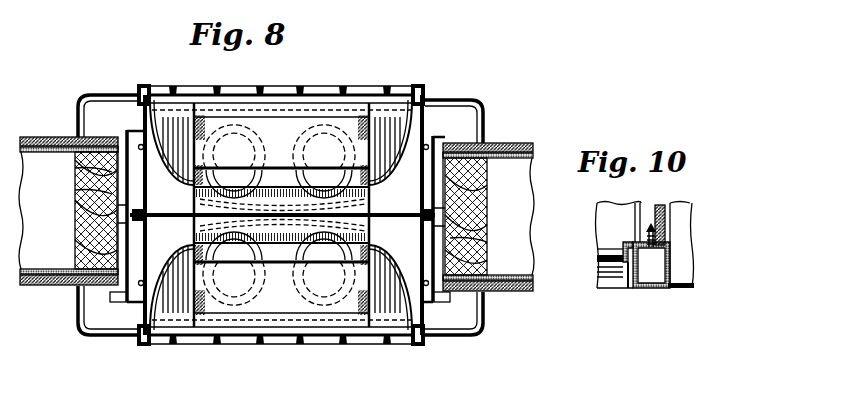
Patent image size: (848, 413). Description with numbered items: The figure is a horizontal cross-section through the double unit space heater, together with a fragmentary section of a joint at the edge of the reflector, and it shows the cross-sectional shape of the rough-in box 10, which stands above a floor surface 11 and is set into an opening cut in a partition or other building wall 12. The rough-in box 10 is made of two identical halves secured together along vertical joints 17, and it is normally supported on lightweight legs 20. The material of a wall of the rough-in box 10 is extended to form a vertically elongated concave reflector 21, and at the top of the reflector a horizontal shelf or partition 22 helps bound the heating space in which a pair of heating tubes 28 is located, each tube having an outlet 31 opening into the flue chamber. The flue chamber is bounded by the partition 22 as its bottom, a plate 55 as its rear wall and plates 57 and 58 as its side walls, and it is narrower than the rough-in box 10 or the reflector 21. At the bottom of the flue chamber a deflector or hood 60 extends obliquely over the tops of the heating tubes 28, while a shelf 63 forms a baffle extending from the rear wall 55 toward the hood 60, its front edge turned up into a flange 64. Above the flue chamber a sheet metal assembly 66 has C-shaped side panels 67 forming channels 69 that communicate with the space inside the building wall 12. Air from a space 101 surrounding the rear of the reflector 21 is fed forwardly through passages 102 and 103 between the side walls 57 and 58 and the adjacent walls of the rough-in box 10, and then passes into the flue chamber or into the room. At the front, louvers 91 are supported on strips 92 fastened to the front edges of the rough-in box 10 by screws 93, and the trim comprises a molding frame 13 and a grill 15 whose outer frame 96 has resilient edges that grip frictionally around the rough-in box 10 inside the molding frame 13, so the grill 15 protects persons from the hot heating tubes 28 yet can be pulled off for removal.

In FIG. 8, the rough-in box 10 is at (486, 179).
In FIG. 10, the rough-in box 10 is at (660, 204).
In FIG. 8, the floor surface 11 is at (377, 310).
In FIG. 8, the partition or other building wall 12 is at (50, 137).
In FIG. 8, the molding frame 13 is at (84, 93).
In FIG. 10, the molding frame 13 is at (683, 290).
In FIG. 8, the grill 15 is at (318, 88).
In FIG. 10, the grill 15 is at (647, 290).
In FIG. 8, the vertical joints 17 is at (150, 205).
In FIG. 8, the legs 20 is at (108, 297).
In FIG. 8, the concave reflector 21 is at (182, 265).
In FIG. 8, the horizontal shelf or partition 22 is at (185, 120).
In FIG. 8, the heating tubes 28 is at (298, 150).
In FIG. 8, the outlet 31 is at (310, 175).
In FIG. 8, the rear wall plate 55 is at (405, 218).
In FIG. 8, the side wall plate 57 is at (366, 228).
In FIG. 8, the side wall plate 58 is at (192, 233).
In FIG. 8, the deflector or hood 60 is at (238, 115).
In FIG. 8, the shelf 63 is at (366, 208).
In FIG. 8, the flange 64 is at (190, 182).
In FIG. 8, the sheet metal assembly 66 is at (110, 170).
In FIG. 8, the side panels 67 is at (110, 192).
In FIG. 8, the channel or space 69 is at (110, 232).
In FIG. 10, the louvers 91 is at (620, 252).
In FIG. 10, the strips 92 is at (634, 286).
In FIG. 10, the screws 93 is at (660, 231).
In FIG. 8, the outer frame 96 is at (138, 112).
In FIG. 10, the outer frame 96 is at (672, 241).
In FIG. 8, the space 101 is at (140, 223).
In FIG. 8, the passage 102 is at (390, 125).
In FIG. 8, the passage 103 is at (171, 122).